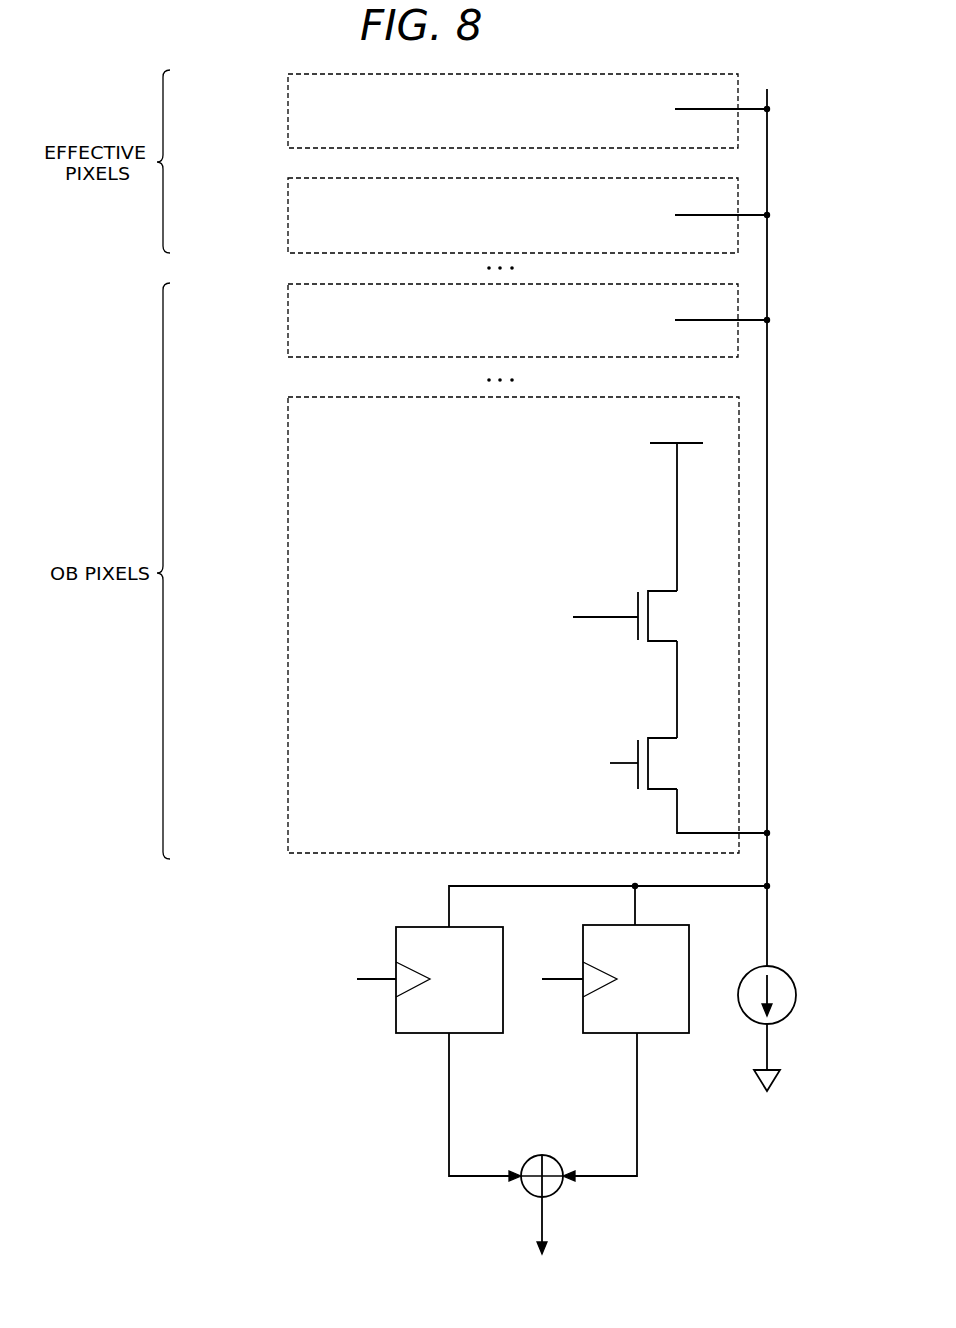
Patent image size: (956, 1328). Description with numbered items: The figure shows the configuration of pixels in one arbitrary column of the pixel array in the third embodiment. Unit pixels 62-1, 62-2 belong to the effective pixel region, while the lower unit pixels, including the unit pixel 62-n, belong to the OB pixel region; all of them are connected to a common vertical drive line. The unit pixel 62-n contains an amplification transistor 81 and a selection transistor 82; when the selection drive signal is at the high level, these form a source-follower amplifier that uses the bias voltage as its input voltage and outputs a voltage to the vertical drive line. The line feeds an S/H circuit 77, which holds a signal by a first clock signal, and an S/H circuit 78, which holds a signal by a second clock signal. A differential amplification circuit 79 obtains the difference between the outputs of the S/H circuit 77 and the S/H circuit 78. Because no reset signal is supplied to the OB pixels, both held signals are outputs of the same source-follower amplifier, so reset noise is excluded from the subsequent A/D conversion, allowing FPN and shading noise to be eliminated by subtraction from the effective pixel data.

The unit pixel 62-1 is at (290, 110).
The unit pixel 62-2 is at (290, 214).
The unit pixel 62-n is at (291, 432).
The amplification transistor 81 is at (667, 604).
The selection transistor 82 is at (667, 750).
The S/H circuit 78 is at (418, 1034).
The S/H circuit 77 is at (660, 1034).
The differential amplification circuit 79 is at (557, 1191).